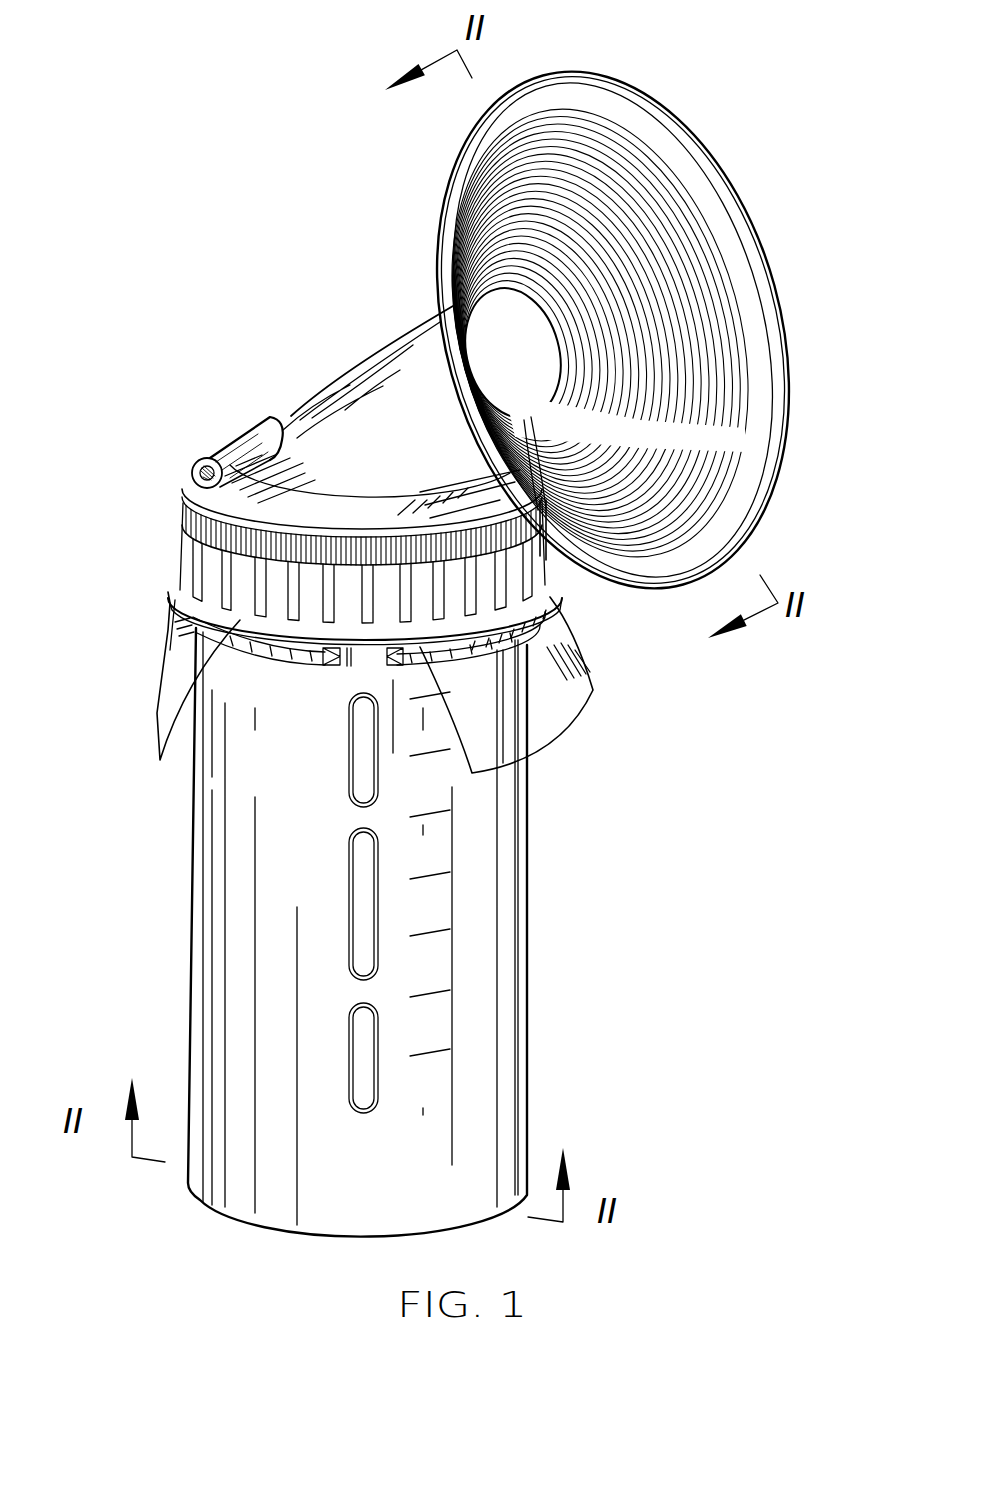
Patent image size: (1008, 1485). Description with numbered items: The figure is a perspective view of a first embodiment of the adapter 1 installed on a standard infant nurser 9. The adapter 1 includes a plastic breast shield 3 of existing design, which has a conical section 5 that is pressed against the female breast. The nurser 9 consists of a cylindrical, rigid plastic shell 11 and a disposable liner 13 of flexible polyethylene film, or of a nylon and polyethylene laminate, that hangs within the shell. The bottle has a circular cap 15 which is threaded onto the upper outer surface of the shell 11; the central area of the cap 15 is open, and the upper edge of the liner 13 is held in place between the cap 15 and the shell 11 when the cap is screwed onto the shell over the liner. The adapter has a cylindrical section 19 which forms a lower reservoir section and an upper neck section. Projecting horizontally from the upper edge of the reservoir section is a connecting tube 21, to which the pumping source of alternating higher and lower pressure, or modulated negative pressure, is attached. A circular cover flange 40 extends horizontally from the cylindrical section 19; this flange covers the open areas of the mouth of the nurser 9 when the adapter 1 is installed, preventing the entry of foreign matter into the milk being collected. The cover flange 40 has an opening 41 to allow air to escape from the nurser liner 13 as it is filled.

The adapter 1 is at (266, 382).
The breast shield 3 is at (728, 212).
The conical section 5 is at (452, 318).
The infant nurser 9 is at (552, 806).
The shell 11 is at (527, 963).
The disposable liner 13 is at (578, 673).
The cap 15 is at (520, 590).
The cylindrical section 19 is at (393, 457).
The connecting tube 21 is at (235, 453).
The cover flange 40 is at (291, 482).
The opening 41 is at (547, 556).